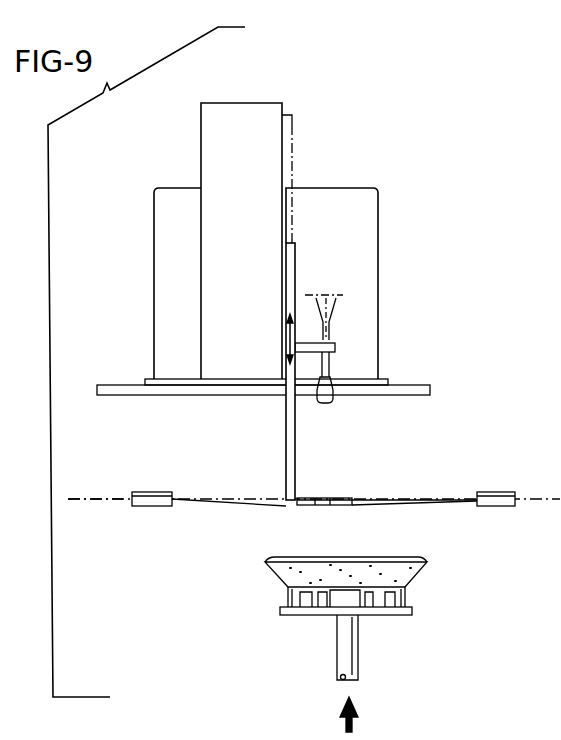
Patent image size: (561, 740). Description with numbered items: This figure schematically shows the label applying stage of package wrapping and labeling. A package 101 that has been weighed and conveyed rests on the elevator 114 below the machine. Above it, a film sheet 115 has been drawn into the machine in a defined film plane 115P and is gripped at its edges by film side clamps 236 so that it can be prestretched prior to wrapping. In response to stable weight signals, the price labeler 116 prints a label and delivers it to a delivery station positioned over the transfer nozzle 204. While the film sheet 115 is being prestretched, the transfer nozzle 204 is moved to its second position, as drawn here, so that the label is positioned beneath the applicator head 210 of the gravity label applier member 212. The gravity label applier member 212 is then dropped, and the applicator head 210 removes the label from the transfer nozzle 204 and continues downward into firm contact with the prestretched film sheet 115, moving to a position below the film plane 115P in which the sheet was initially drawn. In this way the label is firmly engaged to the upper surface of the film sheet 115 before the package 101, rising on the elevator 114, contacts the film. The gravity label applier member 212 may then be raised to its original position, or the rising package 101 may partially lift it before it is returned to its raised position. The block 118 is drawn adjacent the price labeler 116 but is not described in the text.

The upper block 118 is at (247, 108).
The price labeler 116 is at (362, 220).
The transfer nozzle 204 is at (327, 372).
The gravity label applier member 212 is at (283, 433).
The applicator head 210 is at (343, 497).
The film sheet 115 is at (225, 505).
The film plane 115P is at (120, 500).
The film side clamps 236 is at (158, 507).
The package 101 is at (422, 568).
The elevator 114 is at (307, 620).